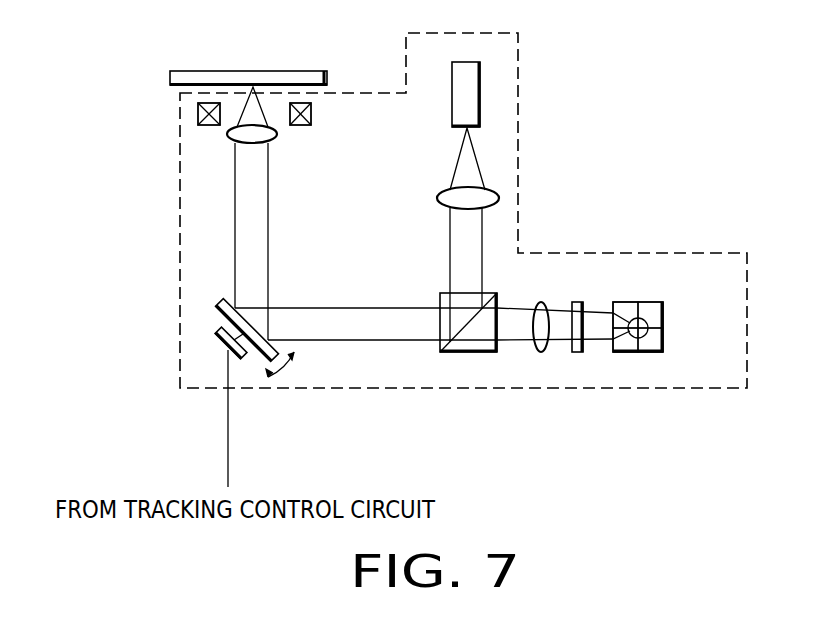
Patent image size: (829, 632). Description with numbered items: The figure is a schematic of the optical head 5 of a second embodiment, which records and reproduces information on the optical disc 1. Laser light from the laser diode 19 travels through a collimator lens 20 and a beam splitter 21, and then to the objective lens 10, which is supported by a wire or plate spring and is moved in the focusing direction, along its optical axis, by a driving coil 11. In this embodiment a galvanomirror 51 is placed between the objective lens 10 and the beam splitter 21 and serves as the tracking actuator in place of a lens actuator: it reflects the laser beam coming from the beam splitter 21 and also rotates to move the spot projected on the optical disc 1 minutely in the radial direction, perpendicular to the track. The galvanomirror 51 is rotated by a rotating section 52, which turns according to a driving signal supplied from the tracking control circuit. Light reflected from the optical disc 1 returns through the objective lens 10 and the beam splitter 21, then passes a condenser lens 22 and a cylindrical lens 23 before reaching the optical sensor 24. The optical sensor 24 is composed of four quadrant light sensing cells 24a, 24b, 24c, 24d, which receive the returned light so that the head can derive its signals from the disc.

The optical disc 1 is at (283, 69).
The optical head 5 is at (520, 186).
The objective lens 10 is at (262, 143).
The driving coil 11 is at (312, 114).
The laser diode 19 is at (452, 80).
The collimator lens 20 is at (445, 190).
The beam splitter 21 is at (447, 354).
The condenser lens 22 is at (536, 353).
The cylindrical lens 23 is at (578, 353).
The optical sensor 24 is at (658, 336).
The light sensing cell 24a is at (623, 351).
The light sensing cell 24b is at (627, 300).
The light sensing cell 24c is at (661, 301).
The light sensing cell 24d is at (658, 353).
The galvanomirror 51 is at (223, 302).
The rotating section 52 is at (223, 343).